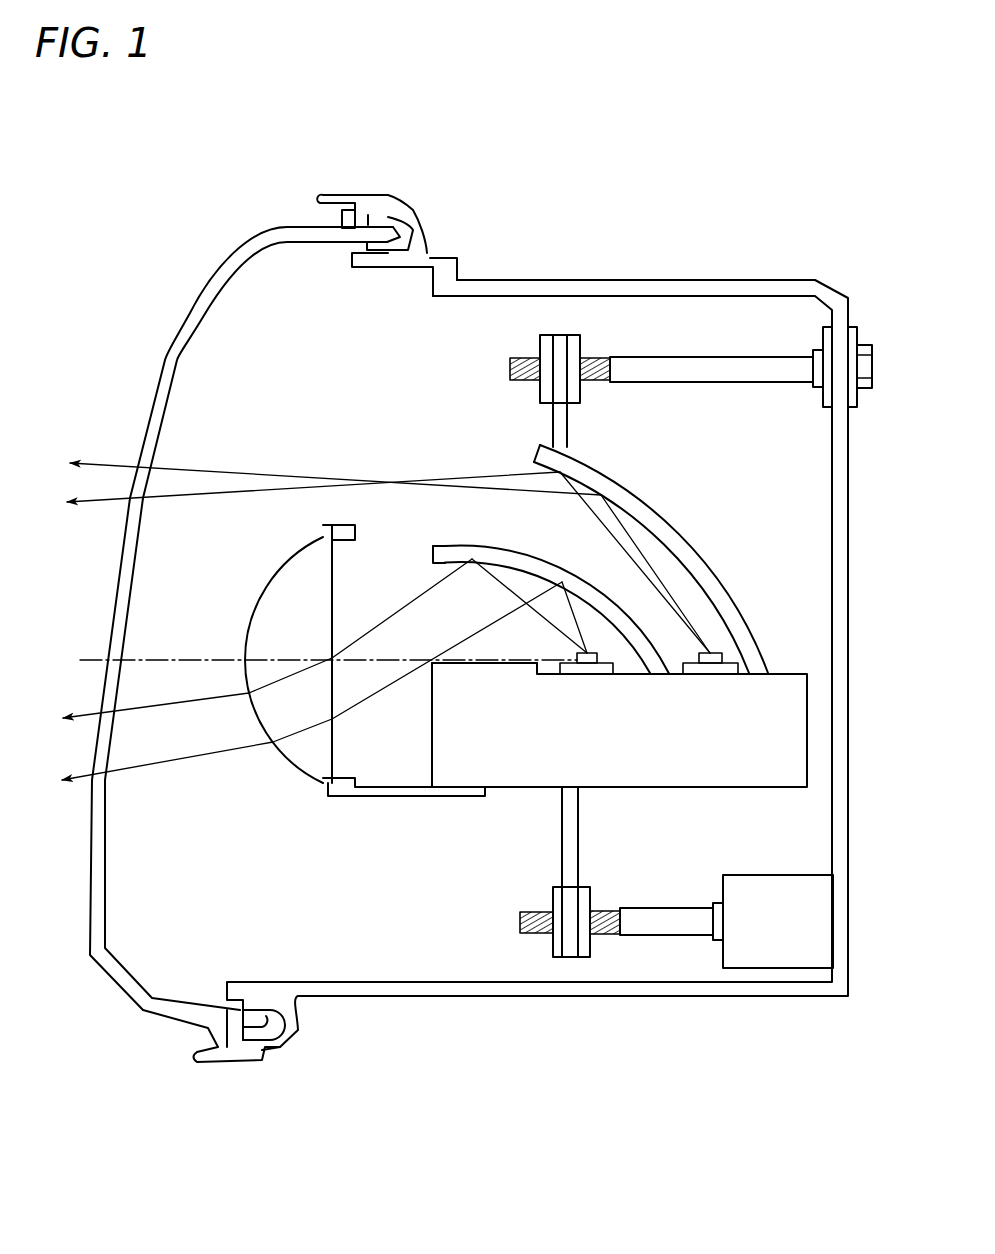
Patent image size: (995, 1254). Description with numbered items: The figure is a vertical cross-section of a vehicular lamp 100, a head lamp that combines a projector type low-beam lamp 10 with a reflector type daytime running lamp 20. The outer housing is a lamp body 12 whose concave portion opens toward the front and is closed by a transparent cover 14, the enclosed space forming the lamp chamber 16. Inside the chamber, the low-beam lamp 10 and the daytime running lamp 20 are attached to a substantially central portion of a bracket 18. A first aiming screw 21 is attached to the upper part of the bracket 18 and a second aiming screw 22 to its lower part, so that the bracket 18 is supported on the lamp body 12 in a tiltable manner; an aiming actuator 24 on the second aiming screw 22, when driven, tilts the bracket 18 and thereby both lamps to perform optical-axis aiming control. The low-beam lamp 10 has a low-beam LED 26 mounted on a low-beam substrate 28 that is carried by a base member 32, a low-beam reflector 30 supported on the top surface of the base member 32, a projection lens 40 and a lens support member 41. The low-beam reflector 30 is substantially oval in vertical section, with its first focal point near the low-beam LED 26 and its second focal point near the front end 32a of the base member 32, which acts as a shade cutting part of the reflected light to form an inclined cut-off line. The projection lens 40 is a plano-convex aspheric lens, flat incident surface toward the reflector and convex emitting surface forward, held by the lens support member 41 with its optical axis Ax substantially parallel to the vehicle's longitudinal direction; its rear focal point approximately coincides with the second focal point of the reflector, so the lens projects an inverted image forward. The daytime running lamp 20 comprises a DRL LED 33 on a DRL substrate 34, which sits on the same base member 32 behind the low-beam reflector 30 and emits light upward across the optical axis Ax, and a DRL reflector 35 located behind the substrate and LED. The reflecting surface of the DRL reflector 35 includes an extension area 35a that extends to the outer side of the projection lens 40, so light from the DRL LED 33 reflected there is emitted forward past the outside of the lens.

The vehicular lamp 100 is at (271, 160).
The lamp body 12 is at (566, 279).
The transparent cover 14 is at (200, 300).
The lamp chamber 16 is at (292, 356).
The low-beam lamp 10 is at (258, 572).
The optical axis Ax is at (168, 658).
The projection lens 40 is at (262, 598).
The lens support member 41 is at (396, 795).
The base member 32 is at (793, 672).
The front end of the base member 32a is at (432, 660).
The low-beam reflector 30 is at (433, 547).
The low-beam LED 26 is at (588, 652).
The low-beam substrate 28 is at (618, 655).
The daytime running lamp 20 is at (522, 464).
The DRL reflector 35 is at (698, 518).
The extension area 35a is at (585, 498).
The DRL LED 33 is at (708, 651).
The DRL substrate 34 is at (728, 664).
The bracket 18 is at (568, 424).
The first aiming screw 21 is at (596, 356).
The second aiming screw 22 is at (607, 906).
The aiming actuator 24 is at (787, 873).